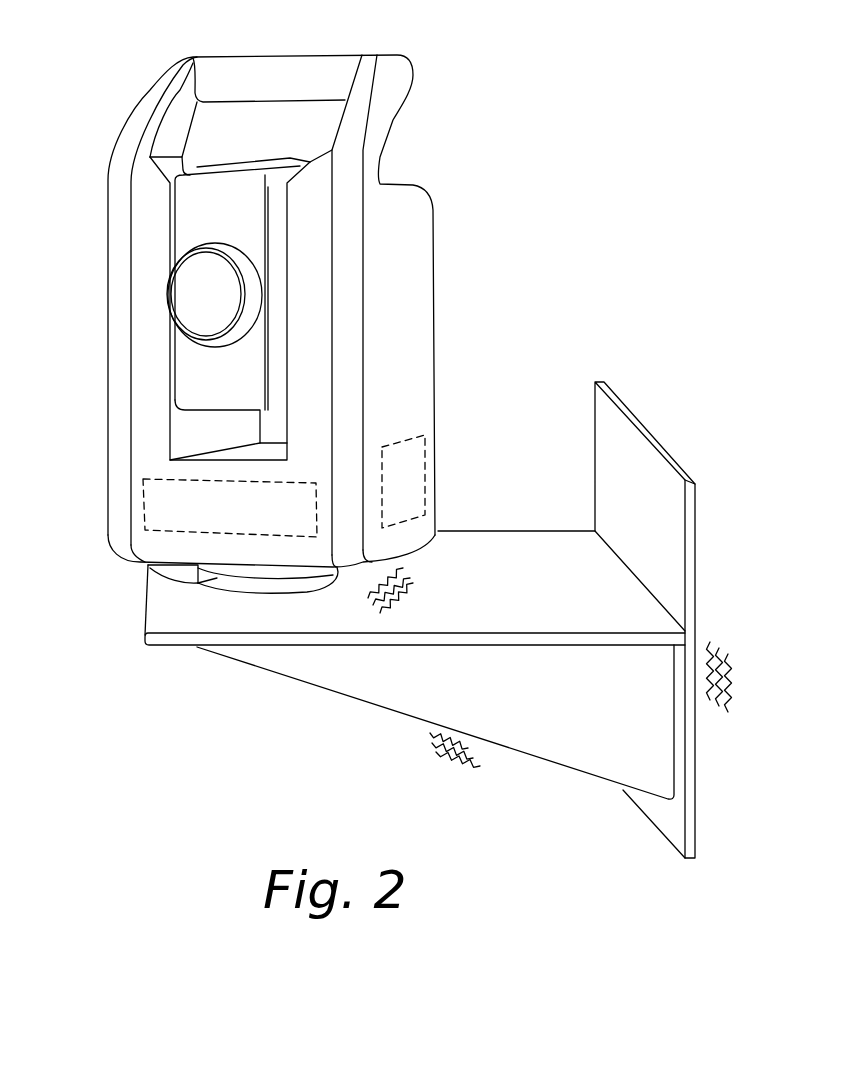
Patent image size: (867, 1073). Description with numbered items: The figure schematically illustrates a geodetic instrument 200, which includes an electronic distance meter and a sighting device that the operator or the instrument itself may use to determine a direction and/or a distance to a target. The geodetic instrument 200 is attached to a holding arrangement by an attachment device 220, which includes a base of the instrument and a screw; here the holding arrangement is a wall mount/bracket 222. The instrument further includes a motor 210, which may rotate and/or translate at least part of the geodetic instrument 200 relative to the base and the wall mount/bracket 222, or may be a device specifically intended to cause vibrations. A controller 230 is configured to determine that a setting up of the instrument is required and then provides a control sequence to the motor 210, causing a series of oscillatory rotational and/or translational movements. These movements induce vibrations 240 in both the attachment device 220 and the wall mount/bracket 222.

The geodetic instrument 200 is at (284, 311).
The motor 210 is at (143, 502).
The attachment device 220 is at (150, 565).
The wall mount/bracket 222 is at (290, 677).
The controller 230 is at (427, 472).
The vibrations 240 is at (420, 593).